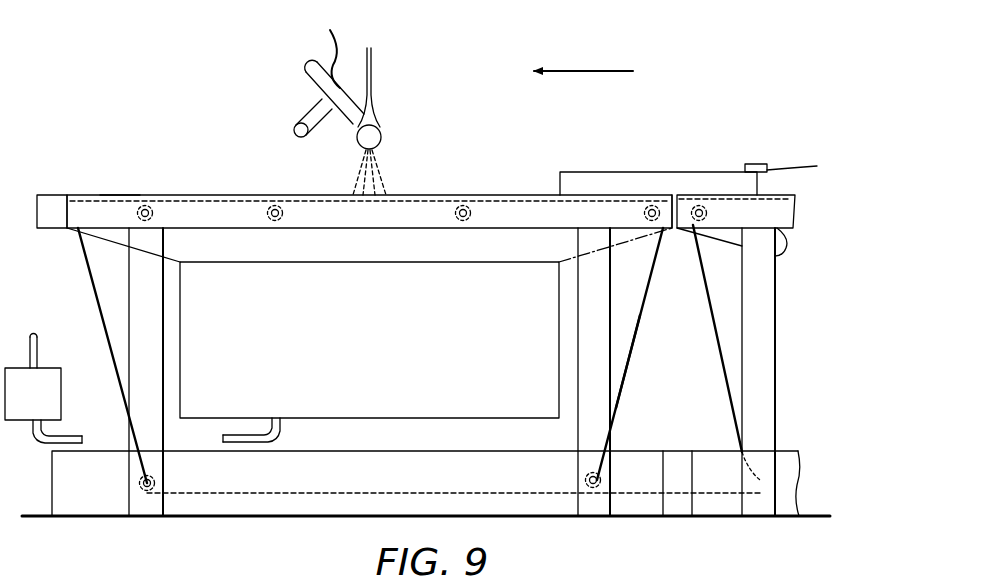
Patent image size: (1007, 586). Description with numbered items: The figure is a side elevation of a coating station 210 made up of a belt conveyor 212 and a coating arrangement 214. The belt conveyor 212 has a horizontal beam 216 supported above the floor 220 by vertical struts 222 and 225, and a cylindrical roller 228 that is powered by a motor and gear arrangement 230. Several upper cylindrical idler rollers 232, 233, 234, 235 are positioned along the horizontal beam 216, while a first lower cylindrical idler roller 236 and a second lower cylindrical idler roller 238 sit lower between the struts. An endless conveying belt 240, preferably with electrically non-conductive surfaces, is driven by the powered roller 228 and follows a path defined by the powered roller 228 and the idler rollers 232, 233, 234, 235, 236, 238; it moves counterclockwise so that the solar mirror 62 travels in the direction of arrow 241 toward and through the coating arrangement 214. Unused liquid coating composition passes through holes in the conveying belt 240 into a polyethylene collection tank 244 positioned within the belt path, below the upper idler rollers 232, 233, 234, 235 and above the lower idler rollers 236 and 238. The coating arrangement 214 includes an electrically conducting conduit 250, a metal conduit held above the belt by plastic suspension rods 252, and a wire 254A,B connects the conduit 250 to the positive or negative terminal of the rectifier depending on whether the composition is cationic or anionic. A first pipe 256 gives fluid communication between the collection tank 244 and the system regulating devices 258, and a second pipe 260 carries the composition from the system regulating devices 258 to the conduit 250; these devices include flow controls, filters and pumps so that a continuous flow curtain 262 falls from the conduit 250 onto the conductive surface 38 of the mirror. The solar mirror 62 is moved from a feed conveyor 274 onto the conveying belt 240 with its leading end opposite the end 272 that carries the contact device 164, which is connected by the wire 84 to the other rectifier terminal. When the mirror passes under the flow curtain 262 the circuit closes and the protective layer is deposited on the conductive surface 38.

The coating station 210 is at (481, 138).
The belt conveyor 212 is at (140, 130).
The coating arrangement 214 is at (400, 132).
The horizontal beam 216 is at (124, 195).
The floor 220 is at (822, 518).
The vertical strut 222 is at (150, 332).
The vertical strut 225 is at (610, 363).
The cylindrical roller 228 is at (119, 198).
The motor and gear arrangement 230 is at (52, 195).
The upper cylindrical idler roller 232 is at (153, 213).
The upper cylindrical idler roller 233 is at (267, 213).
The upper cylindrical idler roller 234 is at (471, 215).
The upper cylindrical idler roller 235 is at (645, 212).
The first lower cylindrical idler roller 236 is at (155, 480).
The second lower cylindrical idler roller 238 is at (585, 478).
The endless conveying belt 240 is at (217, 196).
The arrow 241 is at (583, 70).
The collection tank 244 is at (350, 364).
The electrically conducting conduit 250 is at (382, 140).
The suspension rod 252 is at (373, 78).
The wire 254A,B is at (330, 42).
The first pipe 256 is at (74, 438).
The system regulating devices 258 is at (56, 385).
The second pipe 260 is at (298, 116).
The flow curtain 262 is at (358, 173).
The end of the solar mirror 272 is at (760, 181).
The feed conveyor 274 is at (786, 357).
The conductive surface 38 is at (687, 172).
The solar mirror 62 is at (722, 160).
The contact device 164 is at (762, 164).
The wire 84 is at (785, 168).